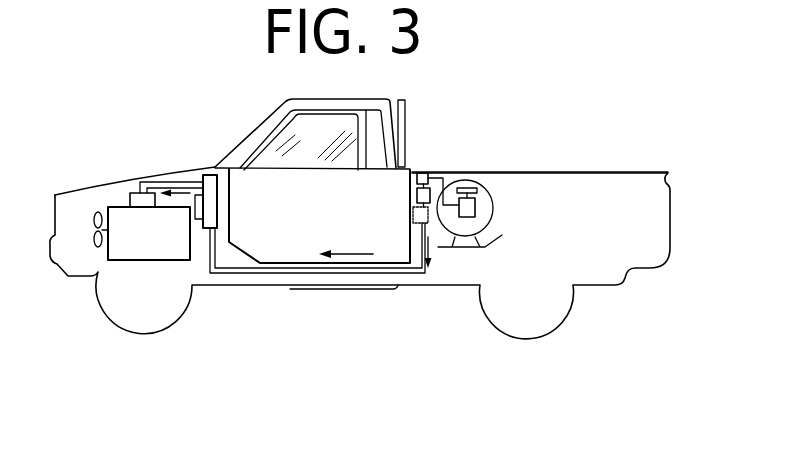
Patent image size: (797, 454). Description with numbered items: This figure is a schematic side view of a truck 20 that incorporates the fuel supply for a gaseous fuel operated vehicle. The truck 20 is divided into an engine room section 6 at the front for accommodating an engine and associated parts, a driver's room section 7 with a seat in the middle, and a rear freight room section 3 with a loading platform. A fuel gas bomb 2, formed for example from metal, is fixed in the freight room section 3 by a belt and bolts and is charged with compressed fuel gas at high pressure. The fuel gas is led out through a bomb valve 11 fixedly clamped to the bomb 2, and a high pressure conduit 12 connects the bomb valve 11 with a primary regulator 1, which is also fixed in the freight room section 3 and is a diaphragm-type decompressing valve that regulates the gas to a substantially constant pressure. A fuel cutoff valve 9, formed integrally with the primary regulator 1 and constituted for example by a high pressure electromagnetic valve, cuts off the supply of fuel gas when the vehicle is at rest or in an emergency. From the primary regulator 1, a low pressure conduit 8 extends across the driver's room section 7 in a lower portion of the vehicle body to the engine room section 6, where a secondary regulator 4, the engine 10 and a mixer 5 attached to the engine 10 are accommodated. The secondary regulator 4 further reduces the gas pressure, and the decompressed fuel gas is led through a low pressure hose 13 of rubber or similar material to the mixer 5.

The primary regulator 1 is at (413, 190).
The fuel gas bomb 2 is at (482, 191).
The rear freight room section 3 is at (585, 188).
The secondary regulator 4 is at (213, 180).
The mixer 5 is at (138, 197).
The engine room section 6 is at (87, 202).
The driver's room section 7 is at (287, 247).
The low pressure conduit 8 is at (325, 277).
The fuel cutoff valve 9 is at (423, 172).
The engine 10 is at (170, 248).
The bomb valve 11 is at (479, 200).
The high pressure conduit 12 is at (439, 174).
The low pressure hose 13 is at (168, 182).
The truck 20 is at (590, 307).